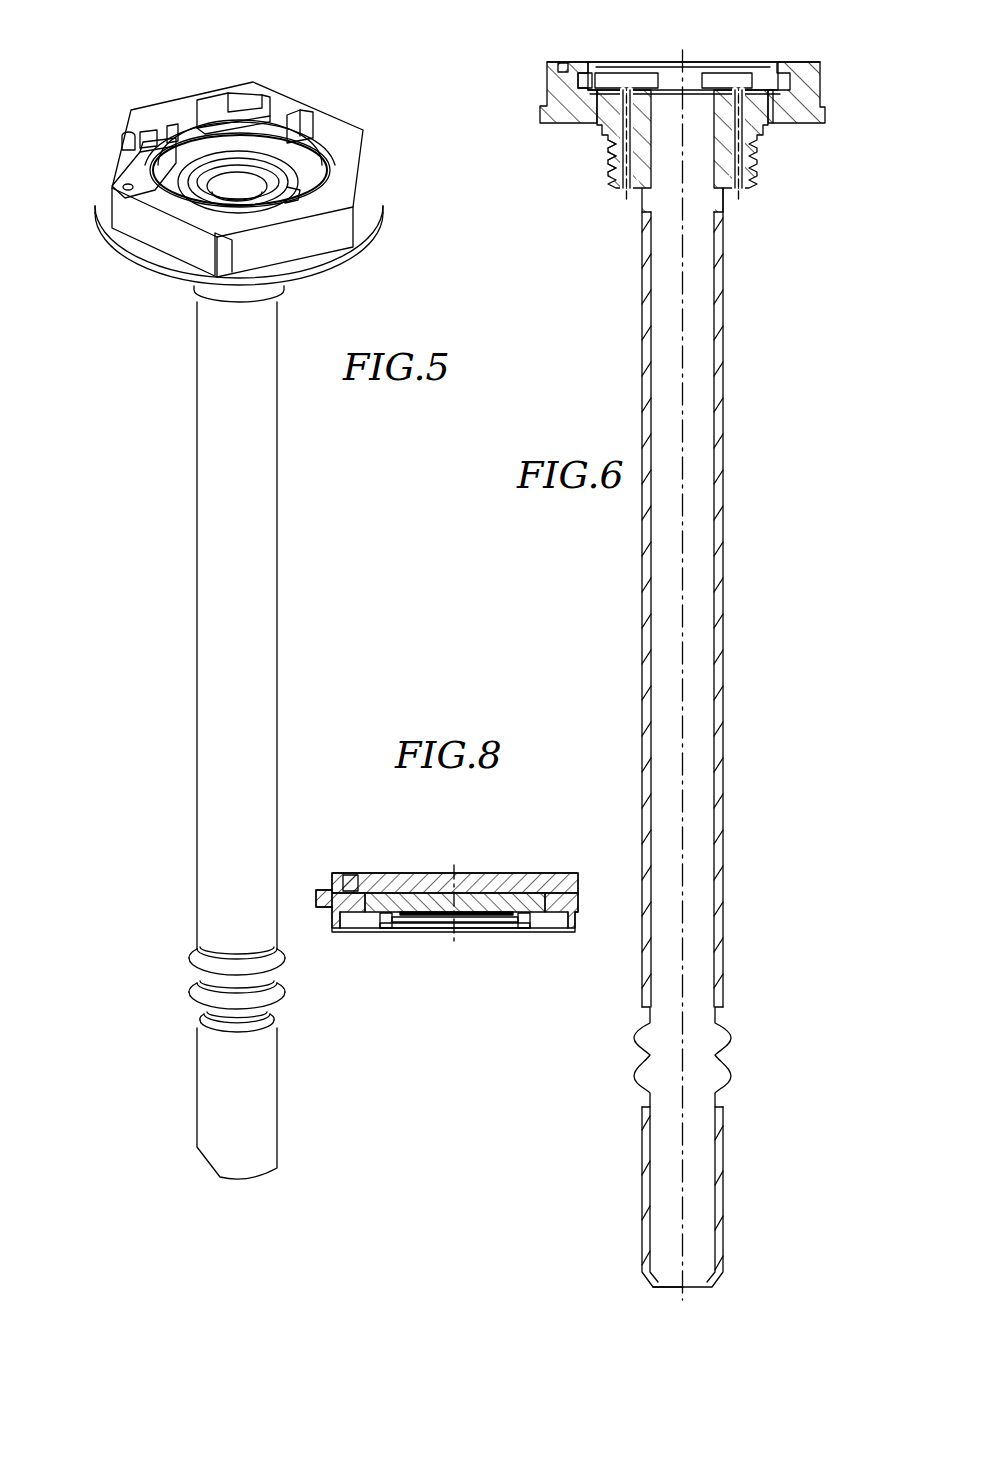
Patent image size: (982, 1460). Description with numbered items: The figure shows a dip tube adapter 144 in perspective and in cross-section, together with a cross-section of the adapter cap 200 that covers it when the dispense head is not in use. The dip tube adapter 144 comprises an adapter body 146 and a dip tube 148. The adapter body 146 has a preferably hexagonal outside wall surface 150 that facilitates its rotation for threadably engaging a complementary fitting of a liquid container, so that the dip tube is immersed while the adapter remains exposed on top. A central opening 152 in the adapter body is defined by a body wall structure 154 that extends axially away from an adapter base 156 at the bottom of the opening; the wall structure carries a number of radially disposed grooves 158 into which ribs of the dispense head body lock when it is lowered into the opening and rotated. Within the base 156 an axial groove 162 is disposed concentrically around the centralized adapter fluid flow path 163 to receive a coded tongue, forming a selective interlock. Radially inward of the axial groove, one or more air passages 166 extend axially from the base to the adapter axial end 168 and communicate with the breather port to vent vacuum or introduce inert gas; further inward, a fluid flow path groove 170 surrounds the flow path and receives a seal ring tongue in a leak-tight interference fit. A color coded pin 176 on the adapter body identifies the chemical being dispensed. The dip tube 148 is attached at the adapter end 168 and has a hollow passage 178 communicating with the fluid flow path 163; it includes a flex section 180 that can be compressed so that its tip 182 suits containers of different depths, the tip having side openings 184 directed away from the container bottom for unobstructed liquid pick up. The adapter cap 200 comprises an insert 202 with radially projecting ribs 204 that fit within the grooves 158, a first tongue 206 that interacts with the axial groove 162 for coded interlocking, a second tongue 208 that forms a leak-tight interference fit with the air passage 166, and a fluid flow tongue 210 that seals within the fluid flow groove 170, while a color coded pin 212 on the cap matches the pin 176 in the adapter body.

In FIG. 5, the dip tube adapter 144 is at (360, 110).
In FIG. 6, the dip tube adapter 144 is at (648, 42).
In FIG. 5, the adapter body 146 is at (160, 108).
In FIG. 6, the adapter body 146 is at (806, 96).
In FIG. 5, the dip tube 148 is at (252, 572).
In FIG. 6, the dip tube 148 is at (728, 362).
In FIG. 5, the outside wall surface 150 is at (290, 247).
In FIG. 6, the outside wall surface 150 is at (821, 70).
In FIG. 5, the central opening 152 is at (280, 122).
In FIG. 6, the central opening 152 is at (758, 68).
In FIG. 5, the body wall structure 154 is at (318, 140).
In FIG. 6, the body wall structure 154 is at (597, 60).
In FIG. 5, the adapter base 156 is at (166, 165).
In FIG. 6, the adapter base 156 is at (616, 90).
In FIG. 5, the grooves 158 is at (233, 120).
In FIG. 6, the grooves 158 is at (785, 80).
In FIG. 5, the axial groove 162 is at (183, 193).
In FIG. 6, the axial groove 162 is at (773, 108).
In FIG. 5, the adapter fluid flow path 163 is at (236, 192).
In FIG. 6, the adapter fluid flow path 163 is at (617, 123).
In FIG. 5, the air passages 166 is at (312, 166).
In FIG. 6, the air passages 166 is at (737, 188).
In FIG. 6, the adapter axial end 168 is at (620, 190).
In FIG. 5, the fluid flow path groove 170 is at (215, 190).
In FIG. 6, the fluid flow path groove 170 is at (640, 100).
In FIG. 5, the color coded pin 176 is at (125, 134).
In FIG. 6, the color coded pin 176 is at (563, 72).
In FIG. 6, the hollow passage 178 is at (652, 378).
In FIG. 5, the flex section 180 is at (203, 960).
In FIG. 6, the flex section 180 is at (728, 1032).
In FIG. 6, the tip 182 is at (693, 1288).
In FIG. 6, the side openings 184 is at (650, 1282).
In FIG. 8, the adapter cap 200 is at (585, 866).
In FIG. 8, the insert 202 is at (467, 900).
In FIG. 8, the ribs 204 is at (316, 897).
In FIG. 8, the first tongue 206 is at (574, 935).
In FIG. 8, the second tongue 208 is at (526, 924).
In FIG. 8, the fluid flow tongue 210 is at (398, 921).
In FIG. 8, the color coded pin 212 is at (347, 878).